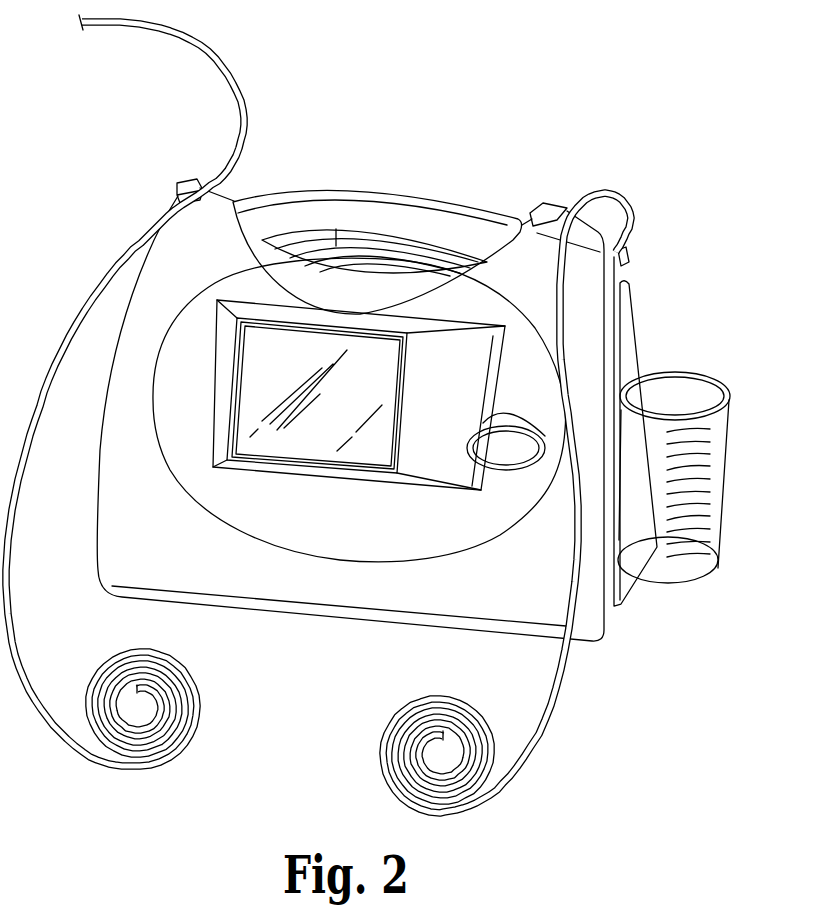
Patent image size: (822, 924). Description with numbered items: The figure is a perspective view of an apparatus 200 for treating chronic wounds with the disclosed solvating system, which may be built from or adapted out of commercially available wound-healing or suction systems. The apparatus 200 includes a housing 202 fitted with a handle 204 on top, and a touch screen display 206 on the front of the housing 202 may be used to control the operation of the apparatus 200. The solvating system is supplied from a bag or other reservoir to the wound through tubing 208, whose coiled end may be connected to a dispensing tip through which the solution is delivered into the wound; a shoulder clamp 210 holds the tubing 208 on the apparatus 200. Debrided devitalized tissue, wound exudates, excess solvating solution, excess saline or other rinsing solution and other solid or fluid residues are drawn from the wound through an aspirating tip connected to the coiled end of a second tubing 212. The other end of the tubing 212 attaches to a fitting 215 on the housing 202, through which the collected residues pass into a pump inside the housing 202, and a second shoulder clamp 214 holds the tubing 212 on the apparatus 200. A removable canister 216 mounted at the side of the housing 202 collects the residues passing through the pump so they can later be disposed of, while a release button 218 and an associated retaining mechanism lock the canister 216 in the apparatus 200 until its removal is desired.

The apparatus 200 is at (321, 369).
The housing 202 is at (98, 574).
The handle 204 is at (438, 206).
The touch screen display 206 is at (402, 386).
The tubing 208 is at (97, 764).
The shoulder clamp 210 is at (178, 192).
The tubing 212 is at (418, 697).
The shoulder clamp 214 is at (557, 207).
The fitting 215 is at (628, 258).
The removable canister 216 is at (694, 376).
The release button 218 is at (468, 448).